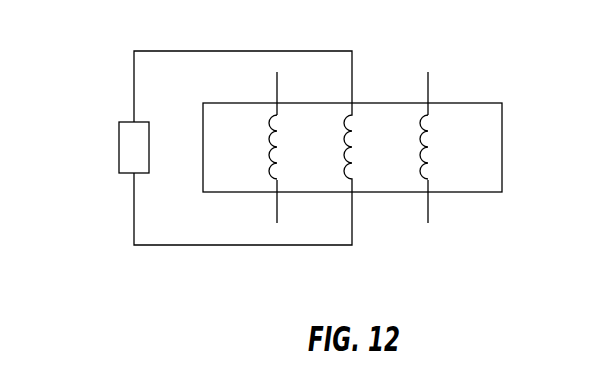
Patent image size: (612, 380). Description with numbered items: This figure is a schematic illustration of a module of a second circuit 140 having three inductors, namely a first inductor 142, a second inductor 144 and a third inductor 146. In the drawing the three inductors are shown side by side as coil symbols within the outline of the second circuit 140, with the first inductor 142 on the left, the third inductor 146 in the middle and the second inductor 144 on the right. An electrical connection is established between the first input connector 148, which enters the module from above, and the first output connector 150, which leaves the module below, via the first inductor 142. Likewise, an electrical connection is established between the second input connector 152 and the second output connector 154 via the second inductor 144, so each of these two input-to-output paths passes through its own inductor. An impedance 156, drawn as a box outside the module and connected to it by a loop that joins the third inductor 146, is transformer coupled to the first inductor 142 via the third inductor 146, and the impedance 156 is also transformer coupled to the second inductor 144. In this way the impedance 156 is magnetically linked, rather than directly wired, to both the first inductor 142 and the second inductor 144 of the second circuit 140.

The second circuit 140 is at (502, 148).
The first inductor 142 is at (269, 141).
The second inductor 144 is at (427, 149).
The third inductor 146 is at (351, 149).
The first input connector 148 is at (276, 103).
The first output connector 150 is at (276, 197).
The second input connector 152 is at (429, 92).
The second output connector 154 is at (429, 205).
The impedance 156 is at (134, 148).